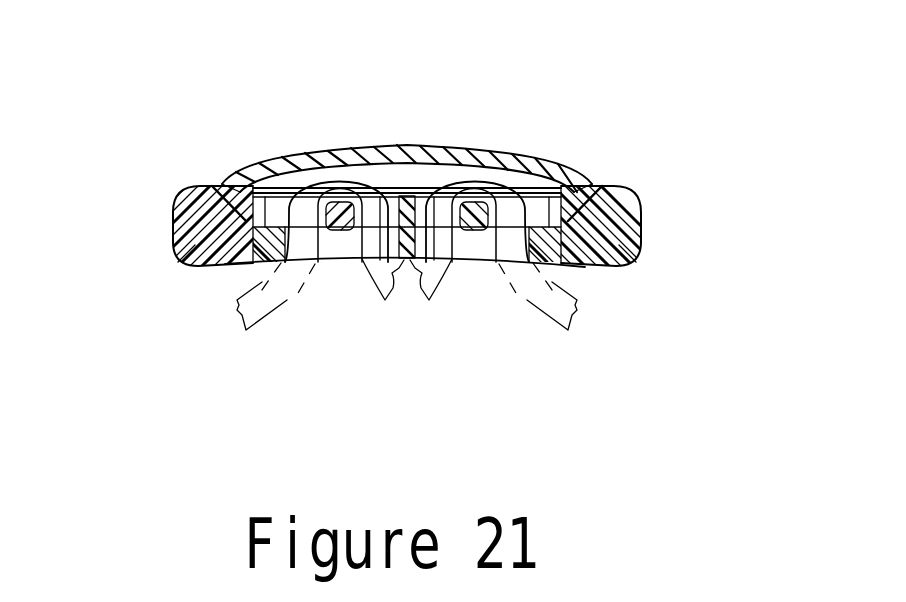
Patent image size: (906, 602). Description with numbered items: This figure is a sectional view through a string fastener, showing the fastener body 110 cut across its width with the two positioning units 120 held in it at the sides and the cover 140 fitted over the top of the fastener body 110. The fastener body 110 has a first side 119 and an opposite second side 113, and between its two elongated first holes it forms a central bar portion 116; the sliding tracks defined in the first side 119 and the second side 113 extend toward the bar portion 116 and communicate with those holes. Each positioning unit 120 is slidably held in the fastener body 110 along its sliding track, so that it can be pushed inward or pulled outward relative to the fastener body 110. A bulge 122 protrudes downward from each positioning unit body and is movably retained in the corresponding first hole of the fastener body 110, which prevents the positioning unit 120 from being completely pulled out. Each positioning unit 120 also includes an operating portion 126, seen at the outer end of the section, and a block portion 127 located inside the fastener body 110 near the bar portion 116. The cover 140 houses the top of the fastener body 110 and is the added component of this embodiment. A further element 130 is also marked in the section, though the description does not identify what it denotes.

The fastener body 110 is at (392, 175).
The second side 113 is at (577, 300).
The bar portion 116 is at (401, 196).
The first side 119 is at (233, 263).
The positioning unit 120 is at (172, 222).
The bulge 122 is at (346, 259).
The operating portion 126 is at (190, 243).
The block portion 127 is at (333, 203).
The mounting surface 130 is at (283, 312).
The cover 140 is at (447, 144).